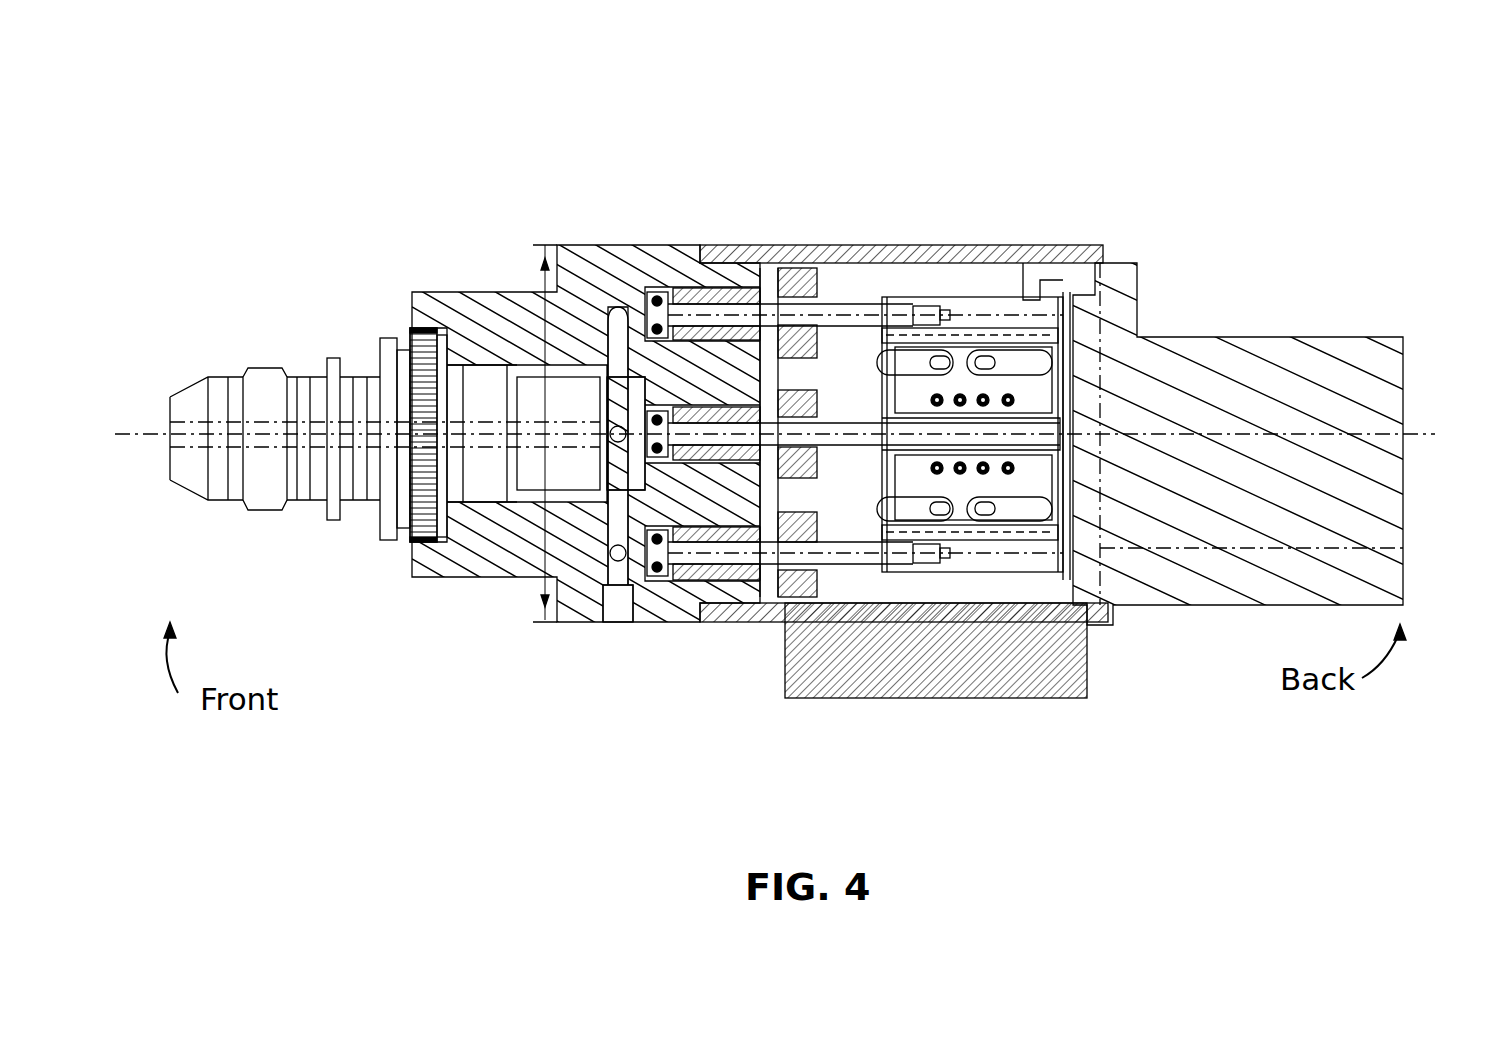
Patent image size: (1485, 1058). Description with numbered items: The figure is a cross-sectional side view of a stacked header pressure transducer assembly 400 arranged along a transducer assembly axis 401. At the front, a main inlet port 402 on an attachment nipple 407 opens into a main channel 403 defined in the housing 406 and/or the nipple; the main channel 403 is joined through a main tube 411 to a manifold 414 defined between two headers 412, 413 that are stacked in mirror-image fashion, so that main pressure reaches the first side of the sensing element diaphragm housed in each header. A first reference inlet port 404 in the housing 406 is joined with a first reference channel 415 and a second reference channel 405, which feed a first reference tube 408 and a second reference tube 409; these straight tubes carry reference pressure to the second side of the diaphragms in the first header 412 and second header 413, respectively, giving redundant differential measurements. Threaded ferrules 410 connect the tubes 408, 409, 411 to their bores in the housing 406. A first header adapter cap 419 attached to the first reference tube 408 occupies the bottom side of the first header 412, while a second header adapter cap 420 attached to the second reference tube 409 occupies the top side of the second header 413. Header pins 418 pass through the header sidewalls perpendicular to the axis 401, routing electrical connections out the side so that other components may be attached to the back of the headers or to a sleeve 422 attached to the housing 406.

The stacked header pressure transducer assembly 400 is at (805, 143).
The transducer assembly axis 401 is at (115, 437).
The main inlet port 402 is at (171, 427).
The main channel 403 is at (545, 433).
The first reference inlet port 404 is at (613, 614).
The second reference channel 405 is at (633, 312).
The housing 406 is at (515, 530).
The attachment nipple 407 is at (255, 365).
The first reference tube 408 is at (843, 552).
The second reference tube 409 is at (780, 314).
The threaded ferrules 410 is at (797, 272).
The main tube 411 is at (855, 425).
The first header 412 is at (1055, 480).
The second header 413 is at (1055, 378).
The manifold 414 is at (912, 432).
The first reference channel 415 is at (648, 565).
The header pins 418 is at (962, 398).
The first header adapter cap 419 is at (975, 535).
The second header adapter cap 420 is at (1034, 330).
The sleeve 422 is at (905, 660).